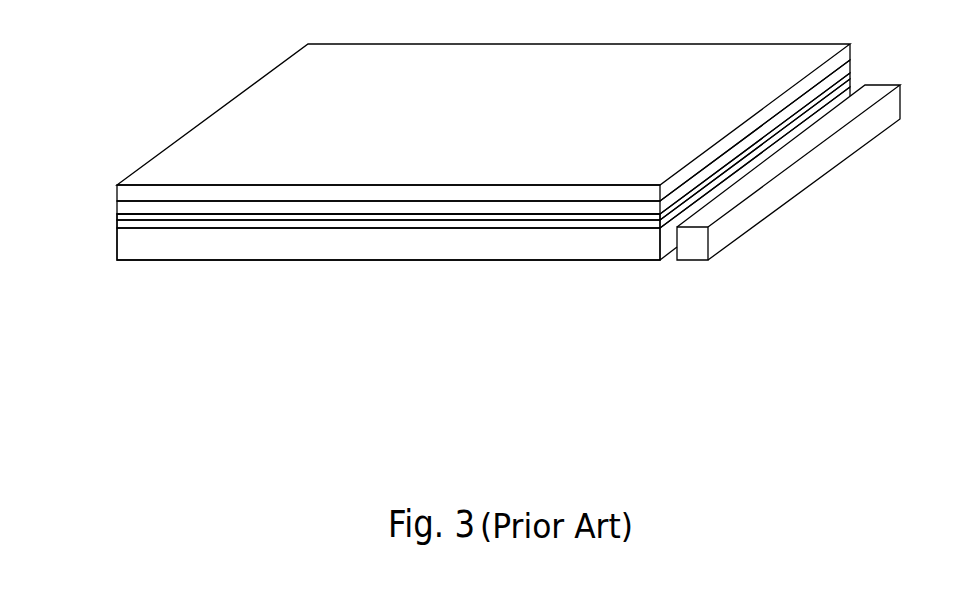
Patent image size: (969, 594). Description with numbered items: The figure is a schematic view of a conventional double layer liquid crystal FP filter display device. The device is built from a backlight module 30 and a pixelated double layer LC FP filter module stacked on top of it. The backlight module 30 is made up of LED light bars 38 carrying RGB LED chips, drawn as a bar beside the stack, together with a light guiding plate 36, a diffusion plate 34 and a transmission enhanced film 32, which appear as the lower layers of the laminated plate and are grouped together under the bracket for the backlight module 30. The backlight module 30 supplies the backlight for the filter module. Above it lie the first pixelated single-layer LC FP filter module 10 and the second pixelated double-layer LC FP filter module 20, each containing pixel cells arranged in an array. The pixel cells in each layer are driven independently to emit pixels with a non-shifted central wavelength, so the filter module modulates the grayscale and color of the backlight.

The first pixelated single-layer LC FP filter module 10 is at (177, 160).
The second pixelated double-layer LC FP filter module 20 is at (123, 207).
The backlight module 30 is at (715, 342).
The transmission enhanced film 32 is at (557, 217).
The diffusion plate 34 is at (578, 223).
The light guiding plate 36 is at (637, 248).
The LED light bars 38 is at (693, 248).